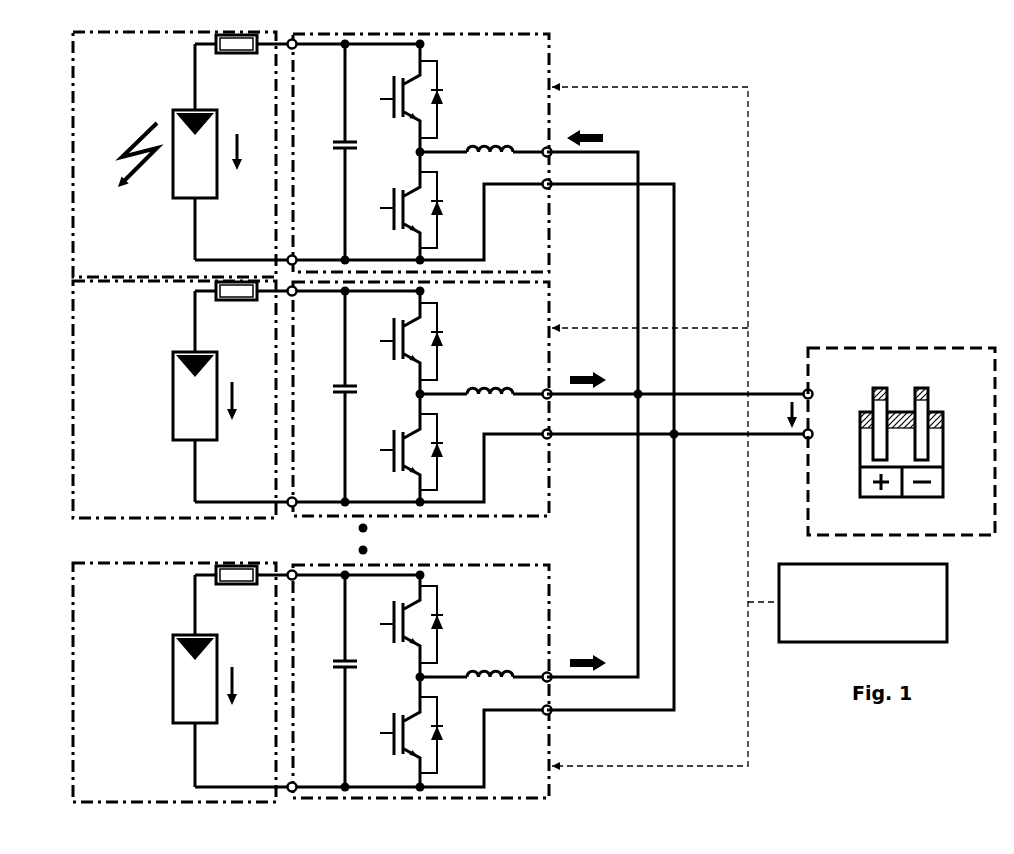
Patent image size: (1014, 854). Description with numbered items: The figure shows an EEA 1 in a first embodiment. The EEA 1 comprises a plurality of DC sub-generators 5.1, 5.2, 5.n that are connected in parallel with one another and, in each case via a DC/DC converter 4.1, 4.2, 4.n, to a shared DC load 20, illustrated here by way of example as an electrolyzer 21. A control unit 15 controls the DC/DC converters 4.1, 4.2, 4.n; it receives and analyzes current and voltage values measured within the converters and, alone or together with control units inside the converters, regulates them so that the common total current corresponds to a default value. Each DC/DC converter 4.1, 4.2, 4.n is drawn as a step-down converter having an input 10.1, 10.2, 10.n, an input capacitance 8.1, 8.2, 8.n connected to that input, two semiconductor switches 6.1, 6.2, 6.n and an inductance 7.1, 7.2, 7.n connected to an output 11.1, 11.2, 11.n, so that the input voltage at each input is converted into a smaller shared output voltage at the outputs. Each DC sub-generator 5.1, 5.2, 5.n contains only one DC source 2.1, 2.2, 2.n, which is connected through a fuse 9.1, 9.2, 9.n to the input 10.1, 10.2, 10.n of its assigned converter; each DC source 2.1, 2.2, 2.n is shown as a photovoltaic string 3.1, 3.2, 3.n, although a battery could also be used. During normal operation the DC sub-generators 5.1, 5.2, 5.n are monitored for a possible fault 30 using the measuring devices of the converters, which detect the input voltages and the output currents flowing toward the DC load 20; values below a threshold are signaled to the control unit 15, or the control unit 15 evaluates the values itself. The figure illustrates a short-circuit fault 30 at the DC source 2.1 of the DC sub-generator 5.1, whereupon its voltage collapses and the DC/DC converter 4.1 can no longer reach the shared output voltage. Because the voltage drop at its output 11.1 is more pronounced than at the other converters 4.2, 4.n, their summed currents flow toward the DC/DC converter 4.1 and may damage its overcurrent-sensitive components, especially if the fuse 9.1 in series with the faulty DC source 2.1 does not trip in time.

The EEA 1 is at (739, 203).
The DC source 2.1 is at (172, 158).
The DC source 2.2 is at (172, 398).
The DC source 2.n is at (172, 683).
The photovoltaic string 3.1 is at (157, 183).
The photovoltaic string 3.2 is at (163, 397).
The photovoltaic string 3.n is at (163, 682).
The DC/DC converter 4.1 is at (552, 73).
The DC/DC converter 4.2 is at (552, 318).
The DC/DC converter 4.n is at (552, 600).
The DC sub-generator 5.1 is at (72, 150).
The DC sub-generator 5.2 is at (73, 397).
The DC sub-generator 5.n is at (73, 681).
The semiconductor switches 6.1 is at (382, 193).
The semiconductor switches 6.2 is at (383, 433).
The semiconductor switches 6.n is at (386, 718).
The inductance 7.1 is at (490, 143).
The inductance 7.2 is at (490, 388).
The inductance 7.n is at (490, 668).
The input capacitance 8.1 is at (352, 130).
The input capacitance 8.2 is at (350, 375).
The input capacitance 8.n is at (353, 653).
The fuse 9.1 is at (237, 55).
The fuse 9.2 is at (237, 302).
The fuse 9.n is at (237, 586).
The input 10.1 is at (322, 185).
The input 10.2 is at (322, 430).
The input 10.n is at (321, 712).
The output 11.1 is at (557, 185).
The output 11.2 is at (557, 436).
The output 11.n is at (557, 712).
The control unit 15 is at (863, 603).
The DC load 20 is at (902, 347).
The electrolyzer 21 is at (943, 460).
The fault 30 is at (121, 157).